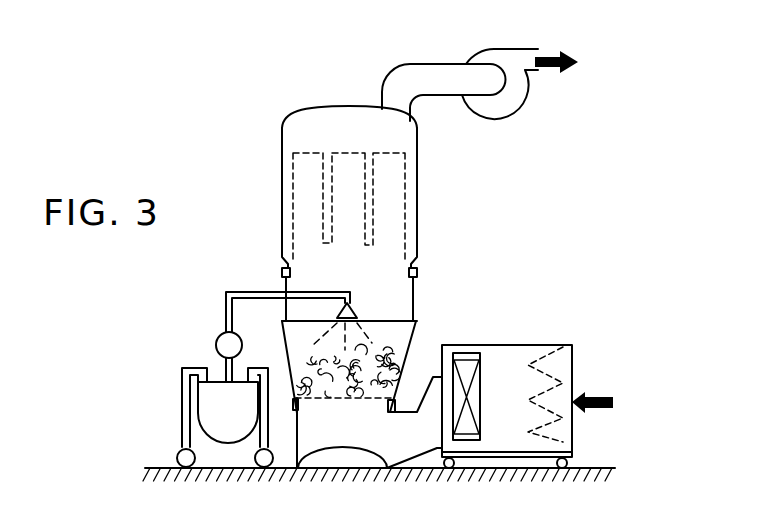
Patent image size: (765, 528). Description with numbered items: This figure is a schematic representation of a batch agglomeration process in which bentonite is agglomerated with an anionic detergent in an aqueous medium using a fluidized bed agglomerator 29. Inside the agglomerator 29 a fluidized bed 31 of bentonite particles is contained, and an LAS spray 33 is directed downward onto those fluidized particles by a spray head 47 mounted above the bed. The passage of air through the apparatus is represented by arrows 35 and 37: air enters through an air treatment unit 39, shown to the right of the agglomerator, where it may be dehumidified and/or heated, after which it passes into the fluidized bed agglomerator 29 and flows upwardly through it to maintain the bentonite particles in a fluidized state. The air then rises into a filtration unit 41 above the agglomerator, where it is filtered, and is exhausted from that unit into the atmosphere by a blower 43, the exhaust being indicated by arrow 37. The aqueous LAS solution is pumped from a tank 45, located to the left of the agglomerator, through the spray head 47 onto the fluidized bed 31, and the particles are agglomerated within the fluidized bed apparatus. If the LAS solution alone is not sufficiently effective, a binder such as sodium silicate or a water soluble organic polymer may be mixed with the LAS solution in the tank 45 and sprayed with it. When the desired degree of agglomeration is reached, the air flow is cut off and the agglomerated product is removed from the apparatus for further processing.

The fluidized bed agglomerator 29 is at (407, 355).
The fluidized bed 31 is at (305, 354).
The LAS spray 33 is at (375, 342).
The arrow 35 is at (608, 398).
The arrow 37 is at (547, 69).
The air treatment unit 39 is at (548, 345).
The filtration unit 41 is at (417, 228).
The blower 43 is at (466, 62).
The tank 45 is at (205, 438).
The spray head 47 is at (353, 303).